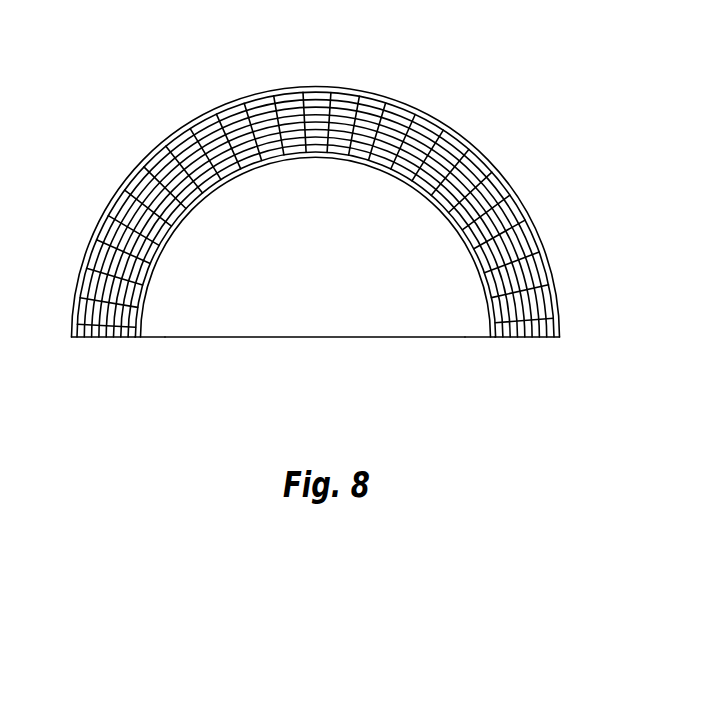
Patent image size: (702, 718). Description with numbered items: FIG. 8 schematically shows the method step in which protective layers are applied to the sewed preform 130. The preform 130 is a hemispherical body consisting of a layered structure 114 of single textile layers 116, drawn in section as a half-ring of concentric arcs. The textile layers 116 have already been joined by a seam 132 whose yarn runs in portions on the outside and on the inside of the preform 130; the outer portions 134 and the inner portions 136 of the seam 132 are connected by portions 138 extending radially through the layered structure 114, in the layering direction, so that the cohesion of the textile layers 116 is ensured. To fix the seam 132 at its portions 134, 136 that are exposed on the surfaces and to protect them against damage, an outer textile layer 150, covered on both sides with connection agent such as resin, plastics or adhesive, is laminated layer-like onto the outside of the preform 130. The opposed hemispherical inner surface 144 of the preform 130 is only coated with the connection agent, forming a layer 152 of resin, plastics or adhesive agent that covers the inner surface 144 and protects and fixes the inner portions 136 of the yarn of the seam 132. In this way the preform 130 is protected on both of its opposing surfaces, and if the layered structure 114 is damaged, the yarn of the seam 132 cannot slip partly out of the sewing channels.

The preform 130 is at (150, 136).
The portions of the seam 138 is at (275, 122).
The outer textile layer 150 is at (455, 127).
The seam 132 is at (500, 175).
The seam portions running on the outside 134 is at (322, 90).
The seam portions running on the inside 136 is at (340, 158).
The inner surface 144 is at (148, 303).
The layer of resin, plastics or adhesive agent 152 is at (490, 320).
The textile layers 116 is at (550, 339).
The layered structure 114 is at (102, 346).